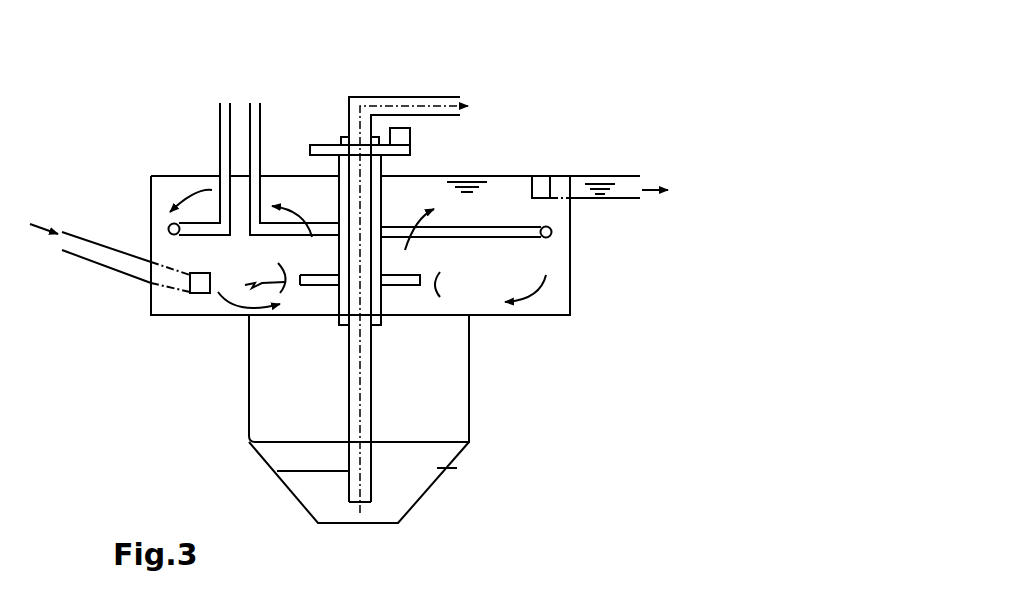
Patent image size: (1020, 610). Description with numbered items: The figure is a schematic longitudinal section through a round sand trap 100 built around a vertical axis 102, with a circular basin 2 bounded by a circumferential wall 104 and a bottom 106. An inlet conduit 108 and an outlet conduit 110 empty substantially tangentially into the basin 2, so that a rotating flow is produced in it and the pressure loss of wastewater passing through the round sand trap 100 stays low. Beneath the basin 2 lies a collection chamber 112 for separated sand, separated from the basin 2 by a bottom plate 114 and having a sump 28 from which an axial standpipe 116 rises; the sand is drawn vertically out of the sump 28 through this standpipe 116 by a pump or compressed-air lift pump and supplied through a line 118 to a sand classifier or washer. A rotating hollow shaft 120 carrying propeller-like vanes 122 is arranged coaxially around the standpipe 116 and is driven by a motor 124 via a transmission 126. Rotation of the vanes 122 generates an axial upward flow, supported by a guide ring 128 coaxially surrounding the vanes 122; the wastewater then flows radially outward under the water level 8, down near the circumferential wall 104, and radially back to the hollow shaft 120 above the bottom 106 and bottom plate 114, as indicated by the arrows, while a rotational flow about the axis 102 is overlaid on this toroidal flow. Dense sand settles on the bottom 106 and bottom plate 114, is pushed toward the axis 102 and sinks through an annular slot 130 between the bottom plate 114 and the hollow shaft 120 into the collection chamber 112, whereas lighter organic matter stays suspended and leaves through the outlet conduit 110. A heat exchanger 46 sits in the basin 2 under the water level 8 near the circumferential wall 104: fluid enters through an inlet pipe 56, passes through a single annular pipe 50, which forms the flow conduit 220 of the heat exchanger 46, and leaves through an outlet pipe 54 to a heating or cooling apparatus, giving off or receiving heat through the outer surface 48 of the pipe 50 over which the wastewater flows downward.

The round sand trap 100 is at (627, 101).
The circular basin 2 is at (570, 292).
The circumferential wall 104 is at (570, 265).
The bottom 106 is at (553, 315).
The inlet conduit 108 is at (107, 243).
The outlet conduit 110 is at (615, 177).
The collection chamber 112 is at (450, 425).
The bottom plate 114 is at (332, 316).
The axial standpipe 116 is at (277, 471).
The line 118 is at (410, 97).
The rotating hollow shaft 120 is at (378, 317).
The propeller-like vanes 122 is at (399, 285).
The motor 124 is at (400, 138).
The transmission 126 is at (318, 105).
The guide ring 128 is at (250, 274).
The annular slot 130 is at (330, 318).
The water level 8 is at (450, 177).
The heat exchanger 46 is at (492, 228).
The outer surface 48 is at (203, 222).
The annular pipe 50 is at (549, 230).
The outlet pipe 54 is at (218, 118).
The inlet pipe 56 is at (273, 118).
The flow conduit 220 is at (225, 118).
The sump 28 is at (457, 468).
The vertical axis 102 is at (367, 497).